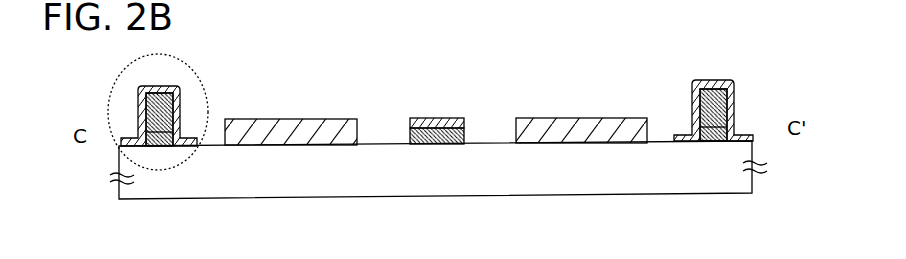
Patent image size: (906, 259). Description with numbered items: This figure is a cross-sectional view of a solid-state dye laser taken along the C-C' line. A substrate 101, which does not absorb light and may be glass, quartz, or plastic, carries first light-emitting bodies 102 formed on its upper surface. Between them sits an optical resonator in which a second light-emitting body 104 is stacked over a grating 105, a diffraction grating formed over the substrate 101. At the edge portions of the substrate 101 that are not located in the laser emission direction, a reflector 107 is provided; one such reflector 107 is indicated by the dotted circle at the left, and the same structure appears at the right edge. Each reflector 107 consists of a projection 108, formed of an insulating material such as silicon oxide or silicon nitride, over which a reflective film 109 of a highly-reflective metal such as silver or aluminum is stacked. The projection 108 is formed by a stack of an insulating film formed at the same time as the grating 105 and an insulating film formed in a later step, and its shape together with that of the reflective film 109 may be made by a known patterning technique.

The substrate 101 is at (215, 194).
The first light-emitting body 102 is at (268, 130).
The second light-emitting body 104 is at (438, 125).
The grating 105 is at (445, 138).
The reflector 107 is at (199, 76).
The projection 108 is at (725, 102).
The reflective film 109 is at (716, 84).